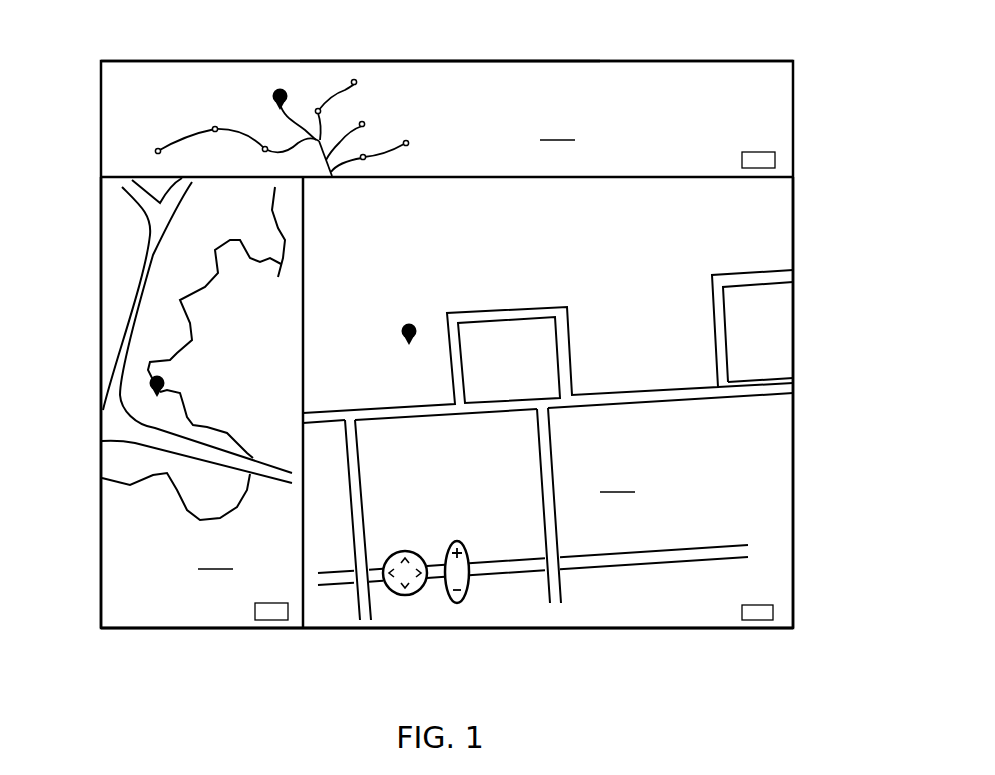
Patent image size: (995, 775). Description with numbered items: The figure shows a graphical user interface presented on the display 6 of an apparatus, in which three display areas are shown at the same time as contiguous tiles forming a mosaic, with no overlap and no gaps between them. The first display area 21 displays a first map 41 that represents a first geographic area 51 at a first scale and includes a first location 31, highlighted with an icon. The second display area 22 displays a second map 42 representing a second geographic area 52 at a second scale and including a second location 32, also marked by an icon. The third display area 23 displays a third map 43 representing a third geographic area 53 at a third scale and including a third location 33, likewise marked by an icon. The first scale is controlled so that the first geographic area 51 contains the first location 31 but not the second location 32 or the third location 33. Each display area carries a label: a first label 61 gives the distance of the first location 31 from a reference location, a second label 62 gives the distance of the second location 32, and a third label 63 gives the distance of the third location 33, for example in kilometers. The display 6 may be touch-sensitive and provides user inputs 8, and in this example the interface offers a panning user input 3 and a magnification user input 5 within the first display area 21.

The display 6 is at (165, 60).
The user input 8 is at (372, 648).
The third display area 23 is at (668, 97).
The third geographic area 53 is at (463, 80).
The third map 43 is at (557, 128).
The third label 63 is at (775, 160).
The third location 33 is at (274, 94).
The first display area 21 is at (755, 230).
The first map 41 is at (617, 480).
The first location 31 is at (406, 323).
The panning user input 3 is at (403, 551).
The magnification user input 5 is at (455, 541).
The first label 61 is at (758, 605).
The first geographic area 51 is at (433, 612).
The second display area 22 is at (113, 540).
The second map 42 is at (215, 557).
The second location 32 is at (165, 386).
The second label 62 is at (268, 612).
The second geographic area 52 is at (193, 613).